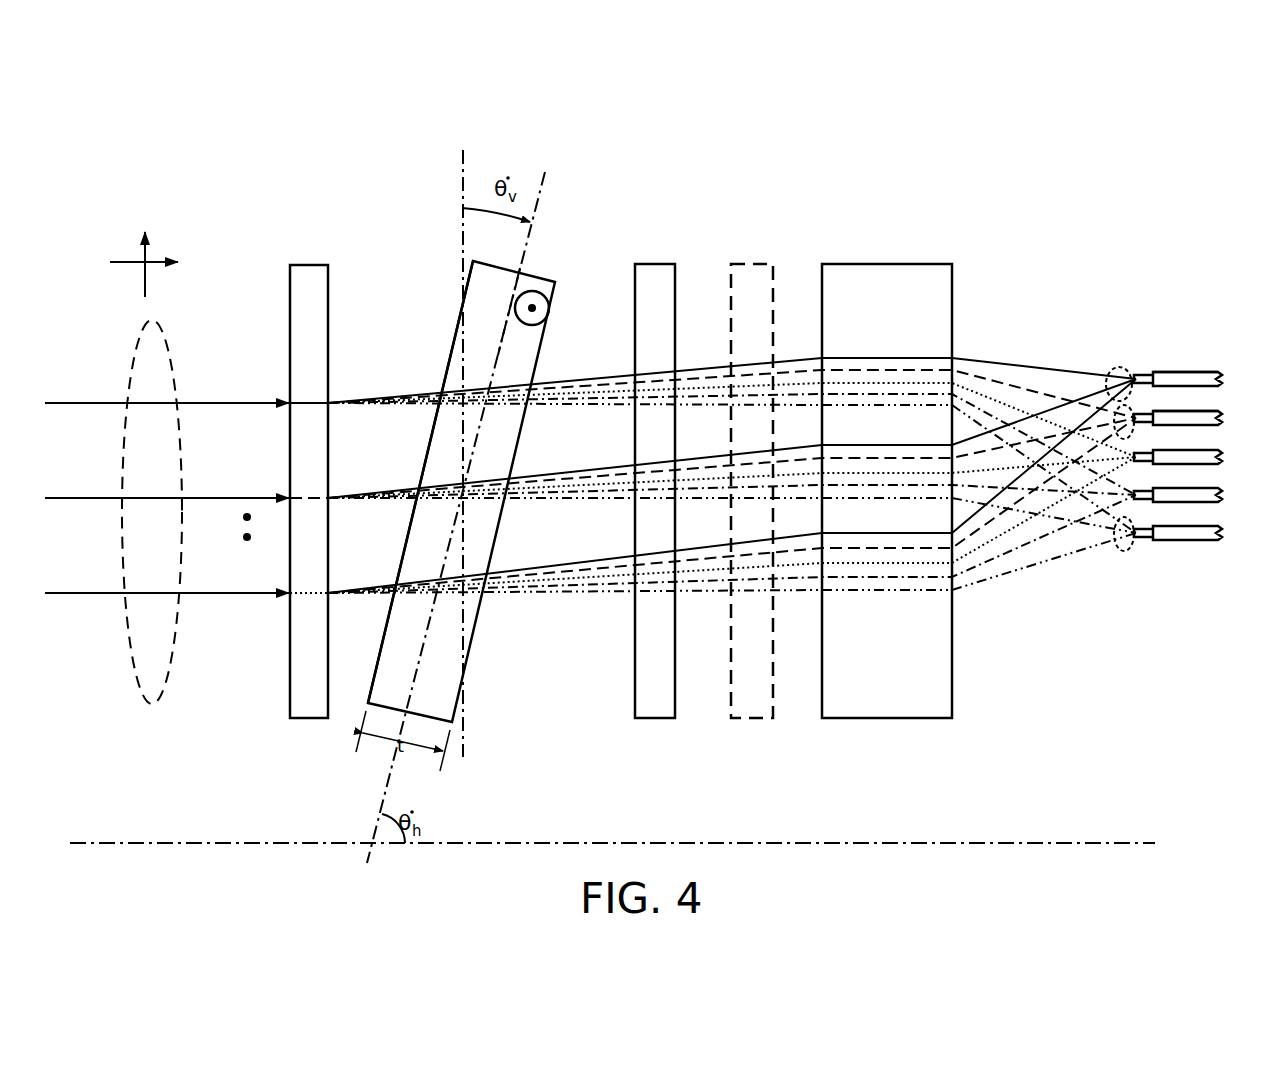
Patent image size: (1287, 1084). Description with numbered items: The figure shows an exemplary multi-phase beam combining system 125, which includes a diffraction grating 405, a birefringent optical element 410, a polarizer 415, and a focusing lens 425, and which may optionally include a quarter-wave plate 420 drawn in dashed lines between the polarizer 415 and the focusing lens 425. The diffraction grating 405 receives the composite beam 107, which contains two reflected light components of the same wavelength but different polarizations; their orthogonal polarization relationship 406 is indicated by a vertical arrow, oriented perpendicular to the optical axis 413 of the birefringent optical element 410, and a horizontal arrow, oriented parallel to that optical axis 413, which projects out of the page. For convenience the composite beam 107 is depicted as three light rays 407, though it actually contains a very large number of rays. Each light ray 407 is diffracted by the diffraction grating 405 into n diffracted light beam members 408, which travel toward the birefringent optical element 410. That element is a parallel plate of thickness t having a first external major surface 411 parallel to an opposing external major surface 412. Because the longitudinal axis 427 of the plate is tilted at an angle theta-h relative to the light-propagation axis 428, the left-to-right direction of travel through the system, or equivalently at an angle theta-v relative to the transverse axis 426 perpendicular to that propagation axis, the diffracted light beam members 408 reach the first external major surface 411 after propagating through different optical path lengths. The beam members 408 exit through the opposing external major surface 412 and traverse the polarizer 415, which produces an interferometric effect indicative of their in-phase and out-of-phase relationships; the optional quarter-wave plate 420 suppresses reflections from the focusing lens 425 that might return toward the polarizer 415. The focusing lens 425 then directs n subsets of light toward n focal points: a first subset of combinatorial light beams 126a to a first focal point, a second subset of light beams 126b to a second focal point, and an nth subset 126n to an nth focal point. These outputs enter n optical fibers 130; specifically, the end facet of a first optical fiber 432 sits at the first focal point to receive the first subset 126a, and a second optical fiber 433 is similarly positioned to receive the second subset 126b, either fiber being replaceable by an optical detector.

The multi-phase beam combining system 125 is at (1036, 140).
The optical fibers 130 is at (1190, 338).
The first subset of combinatorial light beams 126a is at (1112, 368).
The second subset of light beams 126b is at (1127, 410).
The nth subset of light beams 126n is at (1127, 524).
The composite beam 107 is at (172, 368).
The orthogonal polarization relationship 406 is at (127, 228).
The light rays 407 is at (202, 402).
The diffraction grating 405 is at (312, 265).
The diffracted light beam members 408 is at (404, 390).
The birefringent optical element 410 is at (542, 275).
The first external major surface 411 is at (446, 347).
The opposing external major surface 412 is at (549, 340).
The optical axis 413 is at (519, 314).
The polarizer 415 is at (657, 264).
The quarter-wave plate 420 is at (755, 264).
The focusing lens 425 is at (893, 264).
The transverse axis 426 is at (463, 160).
The longitudinal axis 427 is at (546, 160).
The light-propagation axis 428 is at (498, 843).
The first optical fiber 432 is at (1197, 372).
The second optical fiber 433 is at (1210, 411).